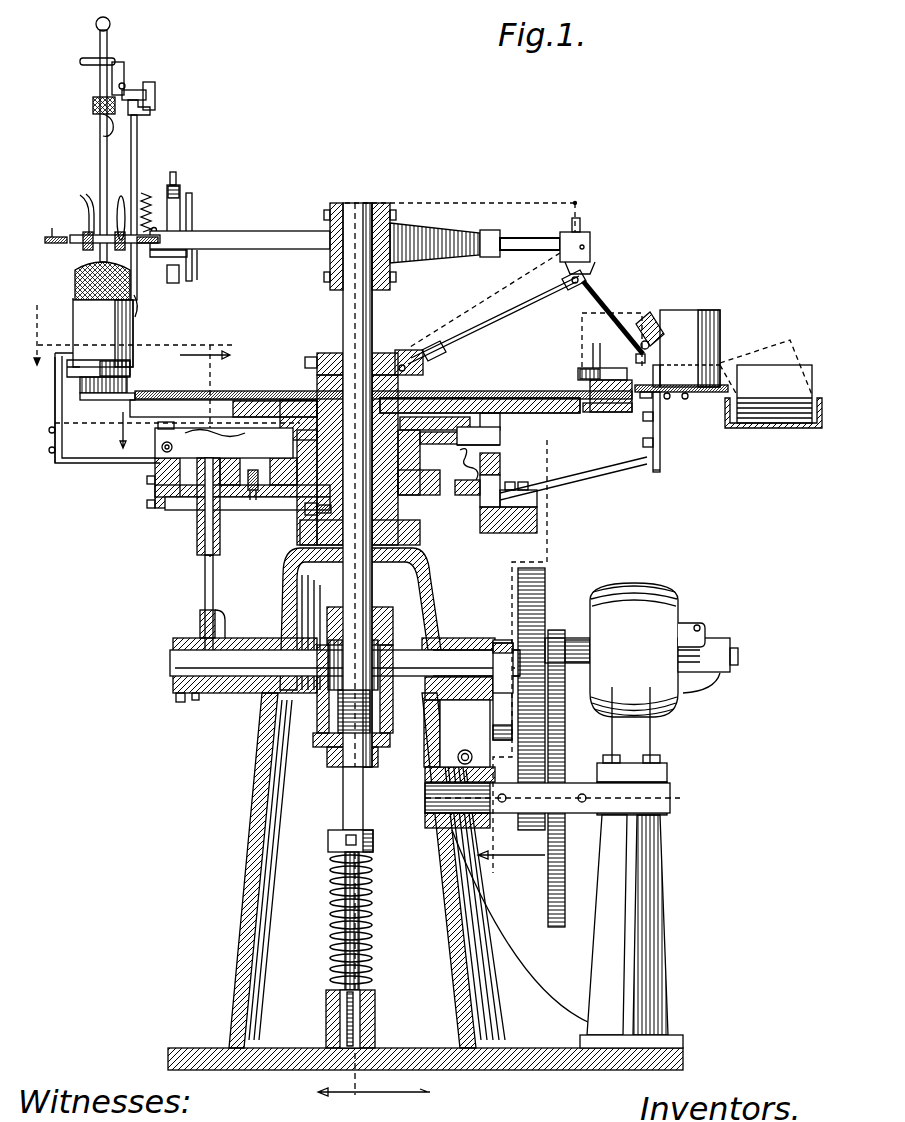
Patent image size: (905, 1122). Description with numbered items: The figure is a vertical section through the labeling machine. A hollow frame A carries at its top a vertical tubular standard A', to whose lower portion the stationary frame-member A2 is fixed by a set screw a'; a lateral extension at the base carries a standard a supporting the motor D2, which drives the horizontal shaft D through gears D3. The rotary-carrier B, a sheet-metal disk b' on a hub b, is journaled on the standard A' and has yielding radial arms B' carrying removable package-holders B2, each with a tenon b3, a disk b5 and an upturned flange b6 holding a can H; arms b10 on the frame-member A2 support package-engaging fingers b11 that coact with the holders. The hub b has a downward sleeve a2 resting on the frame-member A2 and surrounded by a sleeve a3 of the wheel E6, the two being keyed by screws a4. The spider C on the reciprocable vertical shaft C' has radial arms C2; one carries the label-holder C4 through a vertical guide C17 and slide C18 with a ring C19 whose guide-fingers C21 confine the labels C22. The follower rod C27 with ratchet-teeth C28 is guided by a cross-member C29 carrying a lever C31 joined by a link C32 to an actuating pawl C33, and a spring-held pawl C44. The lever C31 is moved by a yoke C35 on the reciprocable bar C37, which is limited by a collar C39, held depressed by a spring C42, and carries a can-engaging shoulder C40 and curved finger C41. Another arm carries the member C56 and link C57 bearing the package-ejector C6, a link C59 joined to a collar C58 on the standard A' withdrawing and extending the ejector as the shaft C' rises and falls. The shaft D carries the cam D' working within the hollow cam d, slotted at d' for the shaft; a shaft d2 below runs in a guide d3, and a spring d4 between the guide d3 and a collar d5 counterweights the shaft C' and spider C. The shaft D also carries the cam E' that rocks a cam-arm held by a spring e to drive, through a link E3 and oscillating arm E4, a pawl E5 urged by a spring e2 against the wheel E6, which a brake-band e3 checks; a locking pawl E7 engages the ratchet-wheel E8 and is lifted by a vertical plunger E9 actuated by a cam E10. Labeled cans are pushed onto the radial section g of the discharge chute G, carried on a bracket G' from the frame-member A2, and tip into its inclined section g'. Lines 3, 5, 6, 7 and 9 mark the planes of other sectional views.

The rod C27 is at (96, 26).
The ratchet-teeth C28 is at (108, 136).
The actuating pawl C33 is at (112, 62).
The link C32 is at (124, 72).
The lever C31 is at (136, 92).
The yoke C35 is at (156, 88).
The collar C39 is at (151, 106).
The cross-member C29 is at (93, 101).
The spring-held pawl C44 is at (106, 124).
The vertically reciprocable bar C37 is at (138, 162).
The spring C42 is at (150, 200).
The vertical guide C17 is at (182, 196).
The slide C18 is at (192, 222).
The arms C2 is at (245, 232).
The ring C19 is at (78, 236).
The vertical guide-fingers C21 is at (118, 200).
The label-holder C4 is at (75, 272).
The receptacle H is at (803, 330).
The labels C22 is at (73, 300).
The can-engaging shoulder C40 is at (138, 296).
The outwardly curved finger C41 is at (137, 305).
The upturned flange b6 is at (85, 358).
The arms b10 is at (60, 465).
The package-engaging fingers b11 is at (56, 370).
The radial arms B' is at (52, 410).
The section line 3 is at (126, 335).
The section line 9 is at (205, 442).
The section line 5 is at (177, 430).
The rotary-carrier B is at (356, 372).
The package-holders B2 is at (140, 388).
The disk b5 is at (592, 355).
The hub b is at (441, 385).
The sheet-metal disk b' is at (464, 376).
The ratchet-wheel E8 is at (440, 460).
The locking pawl E7 is at (155, 500).
The stationary disk or frame-member A2 is at (197, 530).
The brake-band e3 is at (252, 500).
The set screw a' is at (303, 526).
The vertical plunger E9 is at (205, 590).
The vertical tubular standard A' is at (368, 427).
The sleeve a2 is at (372, 440).
The sleeve a3 is at (372, 462).
The screws a4 is at (372, 484).
The hollow frame A is at (425, 809).
The cam E' is at (482, 690).
The spring e is at (456, 757).
The hollow cam d is at (345, 635).
The cam E10 is at (200, 640).
The horizontal shaft D is at (511, 646).
The cam D' is at (302, 687).
The slots d' is at (353, 730).
The reciprocable vertical shaft C' is at (309, 629).
The spider C is at (442, 227).
The shaft d2 is at (350, 809).
The collar d5 is at (336, 841).
The spring d4 is at (372, 874).
The guide d3 is at (372, 1013).
The section line 7 is at (374, 1105).
The gears D3 is at (541, 604).
The motor D2 is at (676, 604).
The standard a is at (632, 901).
The section line 6 is at (512, 664).
The member C56 is at (576, 242).
The link C59 is at (522, 308).
The collar C58 is at (396, 352).
The link C57 is at (608, 300).
The package-ejector C6 is at (646, 322).
The link E3 is at (500, 433).
The oscillating arm E4 is at (500, 441).
The spring e2 is at (500, 463).
The wheel E6 is at (490, 507).
The pawl E5 is at (505, 504).
The bracket G' is at (573, 466).
The discharge chute G is at (681, 428).
The radial section g is at (674, 415).
The tenon b3 is at (656, 470).
The inclined section g' is at (773, 410).